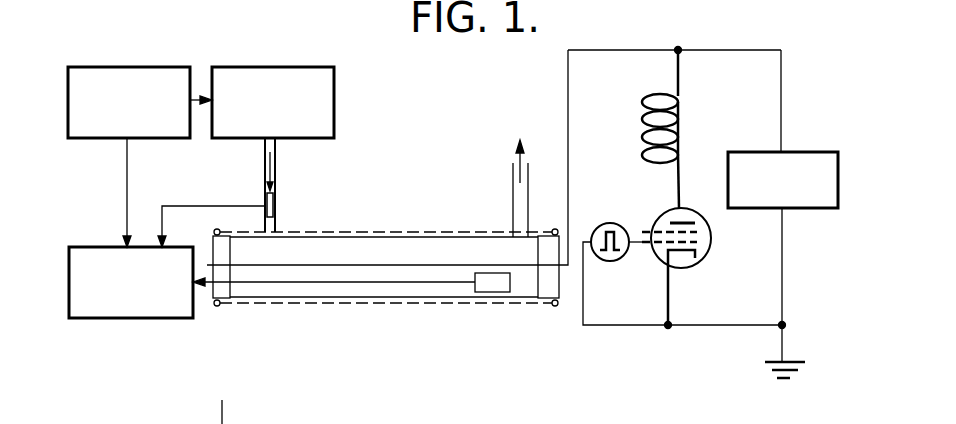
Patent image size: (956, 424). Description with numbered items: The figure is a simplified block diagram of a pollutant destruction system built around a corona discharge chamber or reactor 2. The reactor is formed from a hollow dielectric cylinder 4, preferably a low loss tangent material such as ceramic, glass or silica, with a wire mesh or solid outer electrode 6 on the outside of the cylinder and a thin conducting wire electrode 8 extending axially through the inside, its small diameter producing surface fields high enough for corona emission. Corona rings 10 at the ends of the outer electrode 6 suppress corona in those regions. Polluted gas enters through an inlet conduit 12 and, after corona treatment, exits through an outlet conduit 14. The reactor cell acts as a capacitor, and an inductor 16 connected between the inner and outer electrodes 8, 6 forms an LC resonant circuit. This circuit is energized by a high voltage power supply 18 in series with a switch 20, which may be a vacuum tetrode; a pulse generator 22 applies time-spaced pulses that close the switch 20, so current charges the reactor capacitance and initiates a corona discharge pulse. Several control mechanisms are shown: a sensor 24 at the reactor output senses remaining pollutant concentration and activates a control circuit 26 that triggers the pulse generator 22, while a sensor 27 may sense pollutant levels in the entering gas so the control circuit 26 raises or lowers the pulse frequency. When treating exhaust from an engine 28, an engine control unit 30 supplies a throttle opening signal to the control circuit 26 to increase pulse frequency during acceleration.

The corona discharge chamber 2 is at (404, 213).
The hollow dielectric cylinder 4 is at (440, 232).
The outer electrode 6 is at (320, 232).
The inner wire electrode 8 is at (372, 265).
The corona rings 10 is at (552, 230).
The inlet conduit 12 is at (278, 218).
The outlet conduit 14 is at (512, 192).
The inductor 16 is at (677, 102).
The high voltage power supply 18 is at (728, 162).
The switch 20 is at (707, 250).
The pulse generator 22 is at (619, 259).
The sensor 24 is at (492, 284).
The control circuit 26 is at (193, 318).
The sensor 27 is at (278, 184).
The engine 28 is at (335, 67).
The engine control unit 30 is at (191, 66).